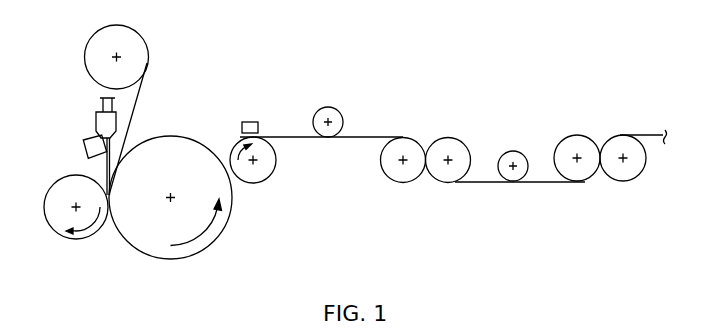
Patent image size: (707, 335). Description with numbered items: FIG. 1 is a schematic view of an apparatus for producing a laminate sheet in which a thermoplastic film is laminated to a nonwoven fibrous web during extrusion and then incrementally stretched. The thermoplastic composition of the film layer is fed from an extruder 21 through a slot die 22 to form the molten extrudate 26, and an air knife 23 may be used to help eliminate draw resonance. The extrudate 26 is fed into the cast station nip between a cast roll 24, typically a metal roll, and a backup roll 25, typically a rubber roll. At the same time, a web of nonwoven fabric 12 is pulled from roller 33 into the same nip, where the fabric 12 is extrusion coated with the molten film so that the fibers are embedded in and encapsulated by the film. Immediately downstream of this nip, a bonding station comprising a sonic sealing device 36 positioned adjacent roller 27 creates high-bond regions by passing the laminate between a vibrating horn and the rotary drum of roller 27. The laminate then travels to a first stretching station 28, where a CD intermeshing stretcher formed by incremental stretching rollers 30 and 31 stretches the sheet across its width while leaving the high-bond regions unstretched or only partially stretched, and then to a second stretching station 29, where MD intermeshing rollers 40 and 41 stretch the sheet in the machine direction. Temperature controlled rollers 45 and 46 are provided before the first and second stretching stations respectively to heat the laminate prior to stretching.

The web of nonwoven fabric 12 is at (283, 136).
The extruder 21 is at (100, 100).
The slot die 22 is at (96, 125).
The air knife 23 is at (83, 147).
The cast roll 24 is at (178, 137).
The backup roll 25 is at (47, 221).
The extrudate 26 is at (106, 173).
The roller 27 is at (262, 183).
The first stretching station 28 is at (427, 200).
The second stretching station 29 is at (600, 198).
The incremental stretching roller 30 is at (403, 182).
The incremental stretching roller 31 is at (448, 179).
The roller 33 is at (150, 52).
The sonic sealing device 36 is at (250, 120).
The MD intermeshing roller 40 is at (578, 182).
The MD intermeshing roller 41 is at (623, 176).
The temperature controlled roller 45 is at (328, 106).
The temperature controlled roller 46 is at (511, 151).